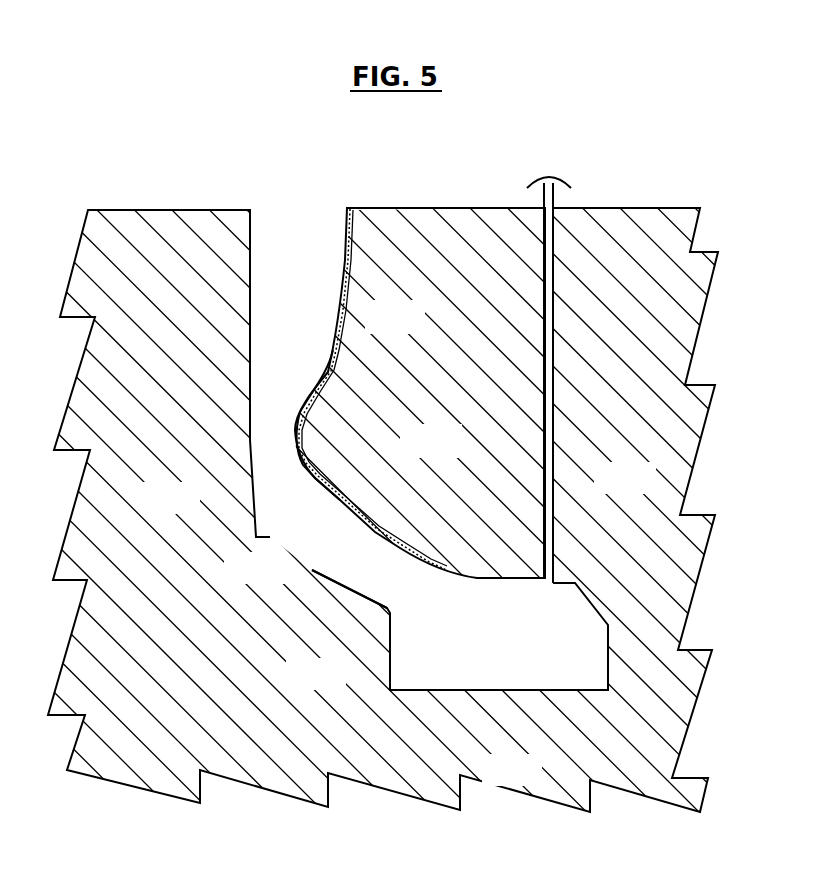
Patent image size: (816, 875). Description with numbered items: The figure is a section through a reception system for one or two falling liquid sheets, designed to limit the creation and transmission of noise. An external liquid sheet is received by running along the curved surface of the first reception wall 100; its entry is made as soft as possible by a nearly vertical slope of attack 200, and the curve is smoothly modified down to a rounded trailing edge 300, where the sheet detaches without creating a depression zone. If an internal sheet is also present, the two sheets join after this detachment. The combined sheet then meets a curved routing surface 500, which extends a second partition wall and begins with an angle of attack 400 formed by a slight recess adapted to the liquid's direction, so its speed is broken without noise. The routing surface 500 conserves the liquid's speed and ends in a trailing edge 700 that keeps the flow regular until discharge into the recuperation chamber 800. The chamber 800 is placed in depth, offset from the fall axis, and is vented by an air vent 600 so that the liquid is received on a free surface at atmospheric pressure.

The first reception wall 100 is at (352, 285).
The slope of attack 200 is at (339, 224).
The trailing edge 300 is at (315, 420).
The angle of attack 400 is at (233, 454).
The curved routing surface 500 is at (305, 580).
The air vent 600 is at (657, 508).
The trailing edge 700 is at (376, 623).
The recuperation chamber 800 is at (522, 704).